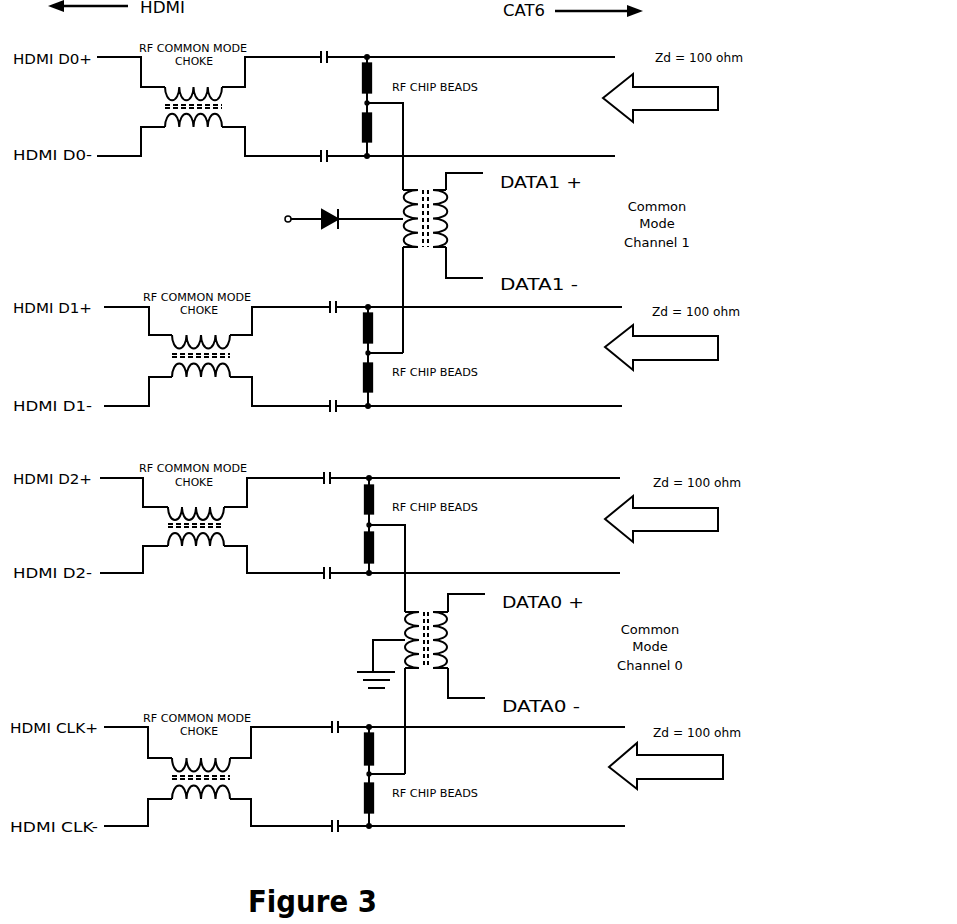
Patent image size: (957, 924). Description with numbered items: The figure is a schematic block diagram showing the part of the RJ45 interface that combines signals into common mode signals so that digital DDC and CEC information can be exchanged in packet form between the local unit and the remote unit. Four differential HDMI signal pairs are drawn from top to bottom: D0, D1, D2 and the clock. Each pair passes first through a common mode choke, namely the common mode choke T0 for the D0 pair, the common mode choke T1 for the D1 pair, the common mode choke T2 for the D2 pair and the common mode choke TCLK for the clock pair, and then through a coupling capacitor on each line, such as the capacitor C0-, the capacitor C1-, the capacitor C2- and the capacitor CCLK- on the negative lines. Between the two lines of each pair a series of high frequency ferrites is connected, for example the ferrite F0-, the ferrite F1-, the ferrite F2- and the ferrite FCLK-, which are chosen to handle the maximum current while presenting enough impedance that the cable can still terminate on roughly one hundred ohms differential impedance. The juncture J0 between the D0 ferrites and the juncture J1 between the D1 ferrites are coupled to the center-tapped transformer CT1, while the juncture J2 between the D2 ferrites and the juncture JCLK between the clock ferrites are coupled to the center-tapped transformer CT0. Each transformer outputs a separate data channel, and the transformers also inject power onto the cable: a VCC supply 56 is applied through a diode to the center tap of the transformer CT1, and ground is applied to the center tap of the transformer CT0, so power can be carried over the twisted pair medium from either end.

The VCC power supply 56 is at (317, 223).
The common mode choke T0 is at (193, 123).
The common mode choke T1 is at (201, 372).
The common mode choke T2 is at (196, 550).
The common mode choke TCLK is at (201, 796).
The transformer CT1 is at (449, 218).
The transformer CT0 is at (446, 640).
The coupling capacitor D0- C0- is at (325, 166).
The ferrite F0- is at (351, 127).
The juncture J0 is at (367, 104).
The coupling capacitor D1- C1- is at (330, 416).
The ferrite F1- is at (352, 377).
The juncture J1 is at (368, 354).
The coupling capacitor D2- C2- is at (325, 584).
The ferrite F2- is at (352, 547).
The juncture J2 is at (369, 526).
The coupling capacitor CLK- CCLK- is at (326, 835).
The ferrite FCLK- is at (338, 798).
The juncture JCLK is at (369, 775).